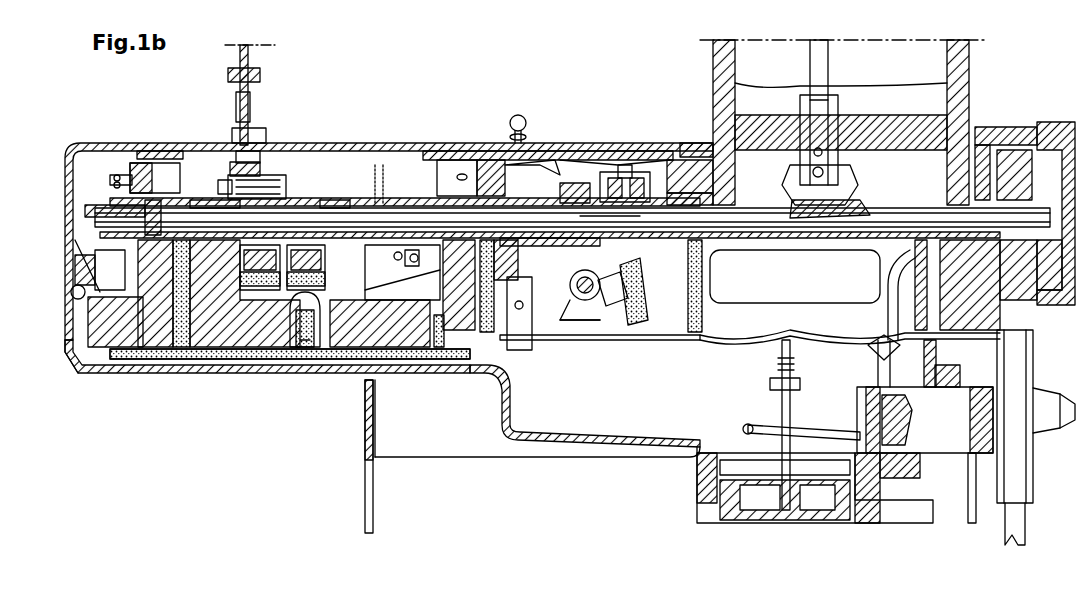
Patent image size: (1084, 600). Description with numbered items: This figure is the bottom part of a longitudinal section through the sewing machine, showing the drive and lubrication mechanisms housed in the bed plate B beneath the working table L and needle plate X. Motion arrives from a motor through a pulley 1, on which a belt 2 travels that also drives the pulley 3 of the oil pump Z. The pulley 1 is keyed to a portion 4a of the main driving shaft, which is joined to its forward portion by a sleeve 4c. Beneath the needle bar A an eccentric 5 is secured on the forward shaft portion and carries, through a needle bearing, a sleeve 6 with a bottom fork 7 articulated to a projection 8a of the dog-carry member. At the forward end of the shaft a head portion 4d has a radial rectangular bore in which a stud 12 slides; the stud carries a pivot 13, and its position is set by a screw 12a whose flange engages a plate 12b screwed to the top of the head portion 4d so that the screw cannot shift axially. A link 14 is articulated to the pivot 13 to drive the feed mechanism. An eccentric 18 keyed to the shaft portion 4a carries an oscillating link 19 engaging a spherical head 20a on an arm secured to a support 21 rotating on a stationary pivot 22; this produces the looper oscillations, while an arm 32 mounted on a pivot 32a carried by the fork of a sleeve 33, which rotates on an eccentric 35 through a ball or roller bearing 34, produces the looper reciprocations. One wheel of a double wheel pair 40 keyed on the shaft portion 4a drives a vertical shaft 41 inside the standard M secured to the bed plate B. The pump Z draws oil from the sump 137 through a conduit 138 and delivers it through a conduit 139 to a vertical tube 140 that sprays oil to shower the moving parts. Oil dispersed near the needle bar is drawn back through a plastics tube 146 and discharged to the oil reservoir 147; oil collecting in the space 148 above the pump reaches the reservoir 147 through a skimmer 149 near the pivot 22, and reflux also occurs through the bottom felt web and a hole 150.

The pulley 1 is at (1055, 132).
The belt 2 is at (1020, 530).
The pulley 3 is at (1020, 372).
The portion of the main driving shaft 4a is at (775, 215).
The sleeve 4c is at (592, 185).
The head portion 4d is at (155, 293).
The eccentric 5 is at (230, 240).
The sleeve 6 is at (278, 190).
The bottom fork 7 is at (265, 290).
The projection 8a is at (245, 293).
The stud 12 is at (185, 160).
The screw 12a is at (150, 200).
The plate 12b is at (128, 185).
The pivot 13 is at (110, 205).
The link 14 is at (78, 372).
The eccentric 18 is at (625, 220).
The oscillating link 19 is at (640, 182).
The spherical head 20a is at (630, 322).
The support 21 is at (600, 320).
The stationary pivot 22 is at (572, 275).
The arm 32 is at (305, 350).
The pivot 32a is at (338, 345).
The sleeve 33 is at (330, 160).
The ball or roller bearing 34 is at (321, 215).
The eccentric 35 is at (390, 265).
The double wheel pair 40 is at (862, 180).
The vertical shaft 41 is at (822, 68).
The sump 137 is at (748, 512).
The conduit 138 is at (945, 425).
The conduit 139 is at (912, 405).
The vertical tube 140 is at (890, 280).
The tube 146 is at (762, 430).
The oil reservoir 147 is at (764, 411).
The space 148 is at (795, 290).
The skimmer 149 is at (520, 280).
The hole 150 is at (478, 430).
The needle bar A is at (258, 100).
The bed plate B is at (123, 370).
The damping layer H is at (212, 358).
The working table L is at (445, 150).
The standard M is at (962, 72).
The needle plate X is at (232, 150).
The pump Z is at (945, 455).